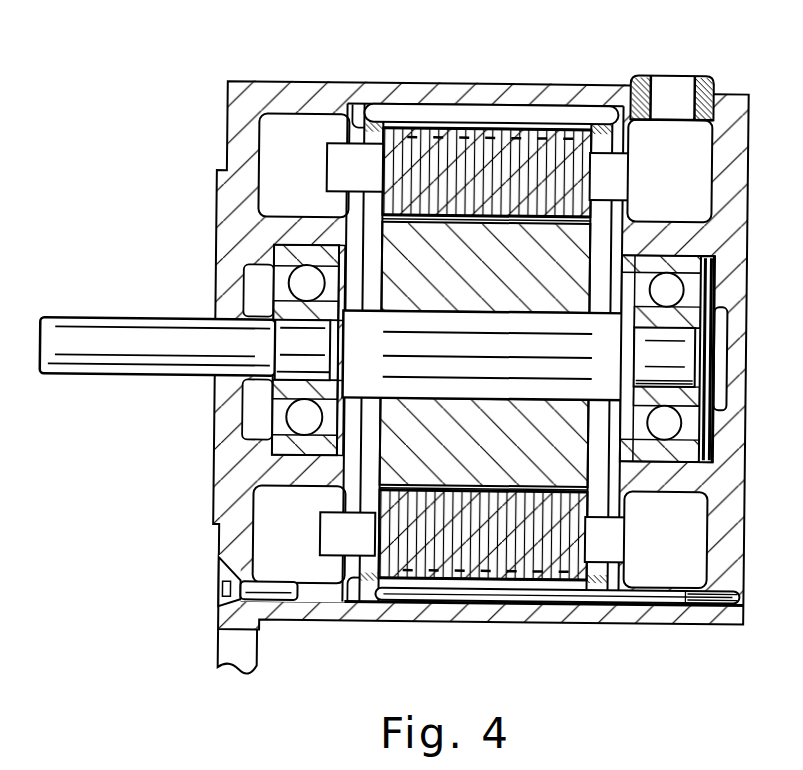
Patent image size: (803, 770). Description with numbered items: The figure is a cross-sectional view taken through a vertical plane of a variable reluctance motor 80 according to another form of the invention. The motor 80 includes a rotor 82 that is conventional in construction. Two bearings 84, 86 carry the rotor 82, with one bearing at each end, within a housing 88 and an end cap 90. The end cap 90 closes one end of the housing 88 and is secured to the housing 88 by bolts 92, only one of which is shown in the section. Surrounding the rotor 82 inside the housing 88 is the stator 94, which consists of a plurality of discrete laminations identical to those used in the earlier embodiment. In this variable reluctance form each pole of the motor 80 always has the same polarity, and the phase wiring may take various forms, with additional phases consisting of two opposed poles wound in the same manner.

The variable reluctance motor 80 is at (215, 60).
The rotor 82 is at (525, 241).
The bearing 84 is at (266, 250).
The bearing 86 is at (661, 263).
The housing 88 is at (410, 85).
The end cap 90 is at (734, 88).
The bolt 92 is at (221, 609).
The stator 94 is at (516, 128).